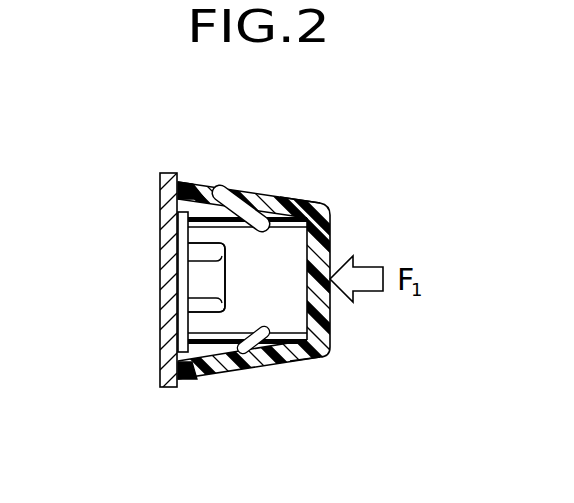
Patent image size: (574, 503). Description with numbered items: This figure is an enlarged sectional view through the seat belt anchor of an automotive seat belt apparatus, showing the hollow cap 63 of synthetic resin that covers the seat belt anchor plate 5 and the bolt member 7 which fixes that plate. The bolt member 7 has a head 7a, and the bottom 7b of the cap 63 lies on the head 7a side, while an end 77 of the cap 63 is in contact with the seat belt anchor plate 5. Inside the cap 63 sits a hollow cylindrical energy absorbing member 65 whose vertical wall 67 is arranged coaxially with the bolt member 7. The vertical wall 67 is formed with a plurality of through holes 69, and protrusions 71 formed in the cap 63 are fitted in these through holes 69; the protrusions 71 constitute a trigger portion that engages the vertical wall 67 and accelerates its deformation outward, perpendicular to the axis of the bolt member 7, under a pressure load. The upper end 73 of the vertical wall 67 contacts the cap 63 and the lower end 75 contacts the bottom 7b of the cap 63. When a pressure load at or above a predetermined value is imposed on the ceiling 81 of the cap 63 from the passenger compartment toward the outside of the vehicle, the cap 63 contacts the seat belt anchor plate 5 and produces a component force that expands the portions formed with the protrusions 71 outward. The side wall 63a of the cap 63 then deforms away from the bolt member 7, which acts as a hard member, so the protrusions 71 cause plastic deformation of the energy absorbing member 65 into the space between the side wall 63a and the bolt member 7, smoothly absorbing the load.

The seat belt anchor plate 5 is at (161, 373).
The bolt member 7 is at (232, 332).
The head of the bolt member 7a is at (206, 287).
The bottom of the cap 7b is at (228, 376).
The cap 63 is at (320, 191).
The side wall of the cap 63a is at (296, 198).
The energy absorbing member 65 is at (196, 192).
The vertical wall 67 is at (209, 214).
The through holes 69 is at (250, 206).
The protrusions 71 is at (258, 334).
The upper end of the vertical wall 73 is at (332, 216).
The lower end of the vertical wall 75 is at (181, 214).
The end of the cap 77 is at (199, 382).
The ceiling of the cap 81 is at (326, 314).